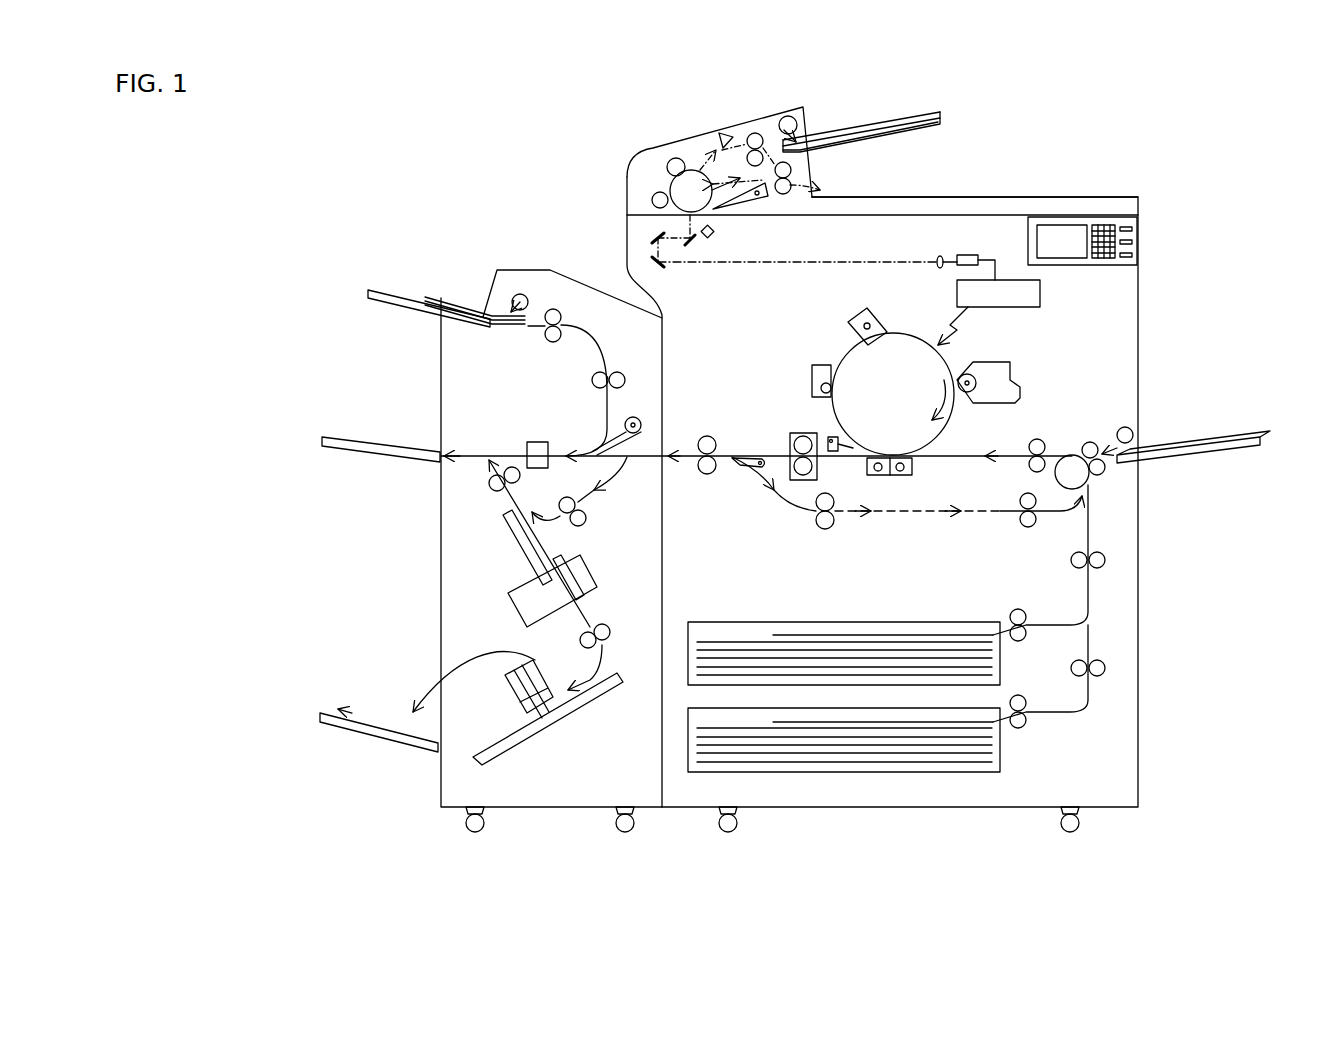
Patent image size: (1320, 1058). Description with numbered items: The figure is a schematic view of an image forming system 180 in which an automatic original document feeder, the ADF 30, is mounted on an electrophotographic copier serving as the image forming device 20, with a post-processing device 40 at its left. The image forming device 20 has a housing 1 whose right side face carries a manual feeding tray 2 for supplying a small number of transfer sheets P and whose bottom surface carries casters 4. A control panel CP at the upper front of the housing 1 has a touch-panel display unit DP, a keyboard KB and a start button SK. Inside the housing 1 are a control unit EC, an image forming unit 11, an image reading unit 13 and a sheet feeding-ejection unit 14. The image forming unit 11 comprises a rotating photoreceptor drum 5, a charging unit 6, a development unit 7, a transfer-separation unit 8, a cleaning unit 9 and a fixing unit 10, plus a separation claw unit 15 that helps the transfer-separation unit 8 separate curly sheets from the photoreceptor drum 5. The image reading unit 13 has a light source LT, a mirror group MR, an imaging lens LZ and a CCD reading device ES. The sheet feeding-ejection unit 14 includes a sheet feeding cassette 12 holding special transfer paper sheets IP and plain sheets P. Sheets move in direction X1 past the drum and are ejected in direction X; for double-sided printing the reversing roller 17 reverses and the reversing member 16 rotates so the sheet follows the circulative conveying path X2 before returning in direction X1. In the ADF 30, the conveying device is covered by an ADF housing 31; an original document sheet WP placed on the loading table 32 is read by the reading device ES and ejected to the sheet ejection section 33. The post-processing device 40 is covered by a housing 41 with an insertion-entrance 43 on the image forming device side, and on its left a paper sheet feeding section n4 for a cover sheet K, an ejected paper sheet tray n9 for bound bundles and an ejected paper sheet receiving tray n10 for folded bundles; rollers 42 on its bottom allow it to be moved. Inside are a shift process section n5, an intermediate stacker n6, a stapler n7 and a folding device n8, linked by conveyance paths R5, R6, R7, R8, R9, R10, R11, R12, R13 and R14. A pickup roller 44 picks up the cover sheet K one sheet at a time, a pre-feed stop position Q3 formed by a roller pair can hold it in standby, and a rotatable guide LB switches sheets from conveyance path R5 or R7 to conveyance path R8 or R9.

The housing 1 is at (1140, 382).
The image forming device 20 is at (1237, 313).
The image forming apparatus 180 is at (466, 142).
The ADF 30 is at (706, 116).
The ADF housing 31 is at (645, 152).
The original document sheet WP is at (833, 140).
The original document loading table 32 is at (930, 112).
The sheet ejection section 33 is at (912, 196).
The control panel CP is at (1030, 222).
The display unit DP is at (1065, 226).
The keyboard KB is at (1100, 225).
The start button SK is at (1135, 243).
The light source LT is at (714, 233).
The mirror group MR is at (668, 270).
The image reading unit 13 is at (782, 270).
The imaging lens LZ is at (938, 258).
The reading device ES is at (970, 255).
The control unit EC is at (998, 308).
The image forming unit 11 is at (827, 342).
The photoreceptor drum 5 is at (950, 423).
The charging unit 6 is at (882, 310).
The cleaning unit 9 is at (812, 372).
The development unit 7 is at (1020, 382).
The fixing unit 10 is at (792, 435).
The separation claw unit 15 is at (833, 455).
The transfer-separation unit 8 is at (912, 470).
The arrow direction X1 is at (756, 482).
The sheet feeding-ejection unit 14 is at (1076, 516).
The circulative conveying path X2 is at (917, 538).
The reversing member 16 is at (742, 467).
The reversing roller 17 is at (707, 474).
The insertion-entrance 43 is at (672, 452).
The sheet ejection direction X is at (686, 460).
The transfer sheet P is at (1198, 437).
The manual feed tray 2 is at (1240, 446).
The sheet feeding cassette 12 is at (839, 621).
The special transfer paper sheets IP is at (915, 635).
The casters 4 is at (735, 832).
The post-processing device 40 is at (543, 218).
The post-processing device housing 41 is at (556, 270).
The pickup roller 44 is at (525, 293).
The cover sheet K is at (441, 298).
The paper sheet feeding section n4 is at (388, 290).
The conveyance path R6 is at (575, 335).
The pre-feed stop position Q3 is at (593, 378).
The conveyance path R7 is at (607, 420).
The rotatable guide LB is at (640, 420).
The shift process section n5 is at (537, 442).
The conveyance path R13 is at (355, 440).
The ejected paper sheet tray n9 is at (352, 462).
The conveyance path R8 is at (488, 457).
The conveyance path R5 is at (627, 460).
The conveyance path R9 is at (588, 516).
The conveyance path R10 is at (508, 500).
The intermediate stacker n6 is at (520, 550).
The stapler n7 is at (590, 565).
The conveyance path R11 is at (607, 608).
The folding device n8 is at (530, 740).
The conveyance path R12 is at (465, 658).
The conveyance path R14 is at (378, 690).
The ejected paper sheet receiving tray n10 is at (350, 742).
The rollers 42 is at (480, 832).